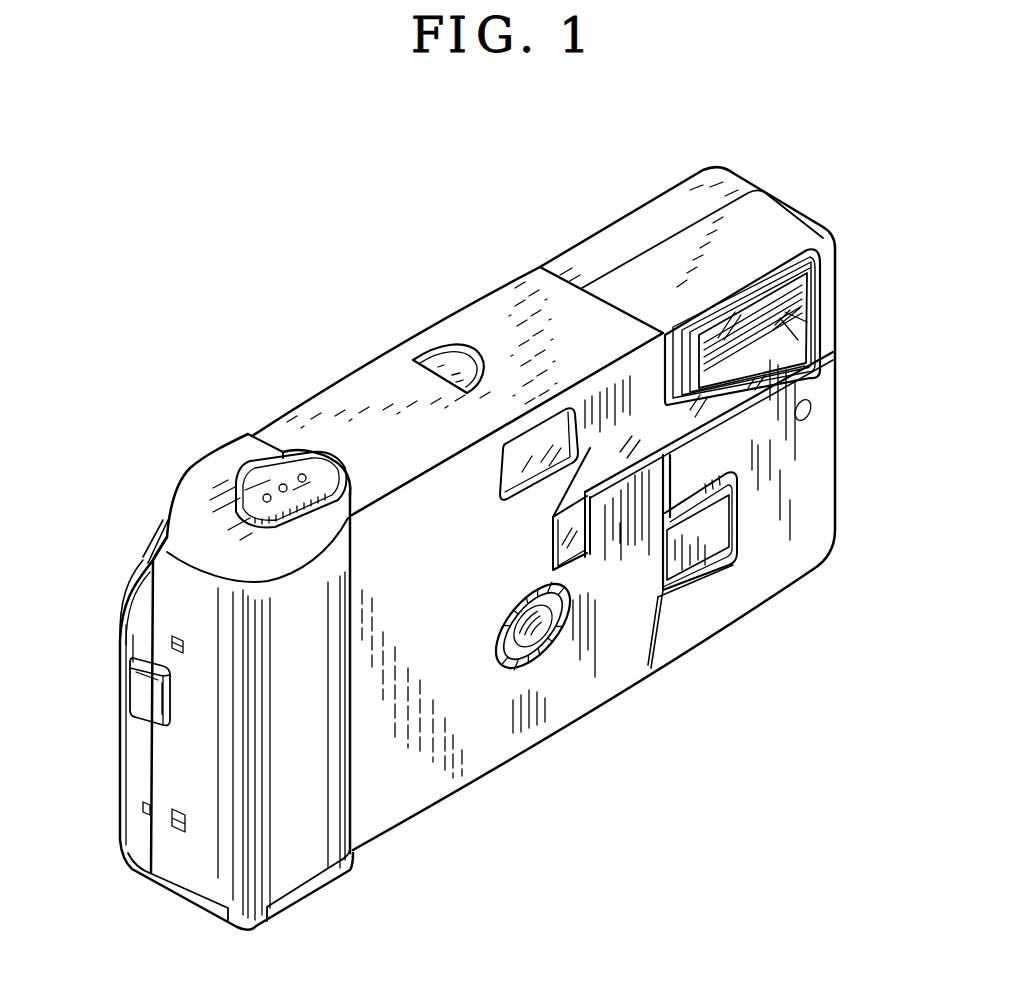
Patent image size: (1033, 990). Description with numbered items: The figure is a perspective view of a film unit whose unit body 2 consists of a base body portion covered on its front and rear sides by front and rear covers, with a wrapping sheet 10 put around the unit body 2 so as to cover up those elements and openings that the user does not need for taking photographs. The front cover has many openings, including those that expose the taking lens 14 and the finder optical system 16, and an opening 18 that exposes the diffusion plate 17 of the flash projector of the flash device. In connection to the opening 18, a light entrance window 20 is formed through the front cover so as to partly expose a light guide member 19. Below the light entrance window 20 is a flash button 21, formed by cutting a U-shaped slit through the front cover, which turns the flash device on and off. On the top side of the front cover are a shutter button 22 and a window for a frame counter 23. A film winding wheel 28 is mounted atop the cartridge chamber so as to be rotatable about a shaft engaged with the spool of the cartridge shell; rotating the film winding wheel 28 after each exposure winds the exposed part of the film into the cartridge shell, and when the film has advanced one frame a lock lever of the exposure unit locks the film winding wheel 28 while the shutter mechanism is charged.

The unit body 2 is at (818, 158).
The wrapping sheet 10 is at (337, 362).
The taking lens 14 is at (558, 636).
The finder optical system 16 is at (506, 478).
The diffusion plate 17 is at (793, 336).
The opening 18 is at (812, 295).
The light guide member 19 is at (660, 430).
The light entrance window 20 is at (733, 408).
The flash button 21 is at (703, 547).
The shutter button 22 is at (262, 480).
The frame counter 23 is at (448, 362).
The film winding wheel 28 is at (153, 528).